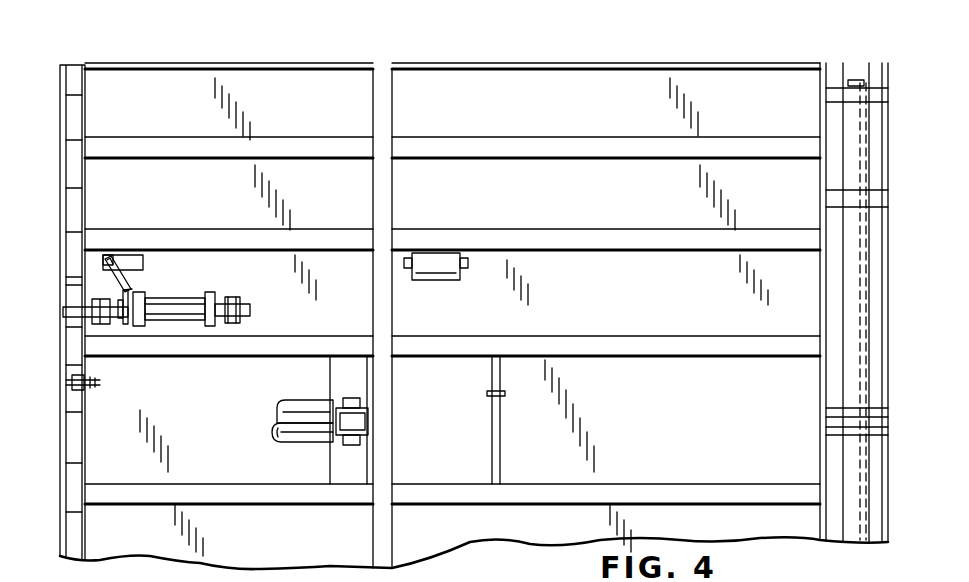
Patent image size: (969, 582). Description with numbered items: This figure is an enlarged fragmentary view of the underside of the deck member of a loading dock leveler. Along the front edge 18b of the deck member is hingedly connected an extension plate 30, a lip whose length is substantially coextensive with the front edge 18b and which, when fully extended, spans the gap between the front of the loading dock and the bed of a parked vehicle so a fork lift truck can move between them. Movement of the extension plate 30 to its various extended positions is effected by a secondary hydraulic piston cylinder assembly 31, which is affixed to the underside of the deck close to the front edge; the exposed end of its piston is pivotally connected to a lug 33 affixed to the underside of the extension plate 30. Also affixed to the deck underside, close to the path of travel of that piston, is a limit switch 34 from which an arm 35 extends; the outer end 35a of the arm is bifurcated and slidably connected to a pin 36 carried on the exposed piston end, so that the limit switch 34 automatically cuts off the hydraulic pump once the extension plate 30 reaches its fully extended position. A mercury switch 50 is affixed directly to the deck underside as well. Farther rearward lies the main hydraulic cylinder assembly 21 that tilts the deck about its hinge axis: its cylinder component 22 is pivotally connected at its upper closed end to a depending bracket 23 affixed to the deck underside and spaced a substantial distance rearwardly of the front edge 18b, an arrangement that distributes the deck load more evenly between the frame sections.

The front edge 18b is at (82, 78).
The extension plate 30 is at (132, 285).
The lug 33 is at (70, 318).
The limit switch 34 is at (122, 256).
The arm 35 is at (129, 288).
The outer end 35a is at (130, 292).
The pin 36 is at (132, 292).
The secondary hydraulic piston cylinder assembly 31 is at (182, 312).
The mercury switch 50 is at (447, 272).
The cylinder component 22 is at (298, 412).
The hydraulic cylinder assembly 21 is at (270, 438).
The depending bracket 23 is at (362, 432).